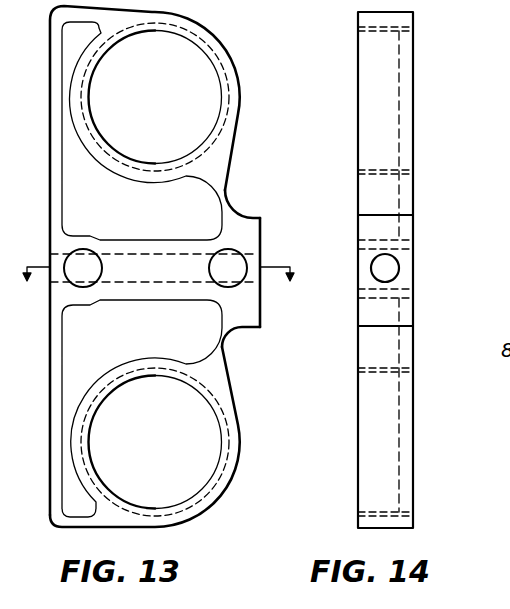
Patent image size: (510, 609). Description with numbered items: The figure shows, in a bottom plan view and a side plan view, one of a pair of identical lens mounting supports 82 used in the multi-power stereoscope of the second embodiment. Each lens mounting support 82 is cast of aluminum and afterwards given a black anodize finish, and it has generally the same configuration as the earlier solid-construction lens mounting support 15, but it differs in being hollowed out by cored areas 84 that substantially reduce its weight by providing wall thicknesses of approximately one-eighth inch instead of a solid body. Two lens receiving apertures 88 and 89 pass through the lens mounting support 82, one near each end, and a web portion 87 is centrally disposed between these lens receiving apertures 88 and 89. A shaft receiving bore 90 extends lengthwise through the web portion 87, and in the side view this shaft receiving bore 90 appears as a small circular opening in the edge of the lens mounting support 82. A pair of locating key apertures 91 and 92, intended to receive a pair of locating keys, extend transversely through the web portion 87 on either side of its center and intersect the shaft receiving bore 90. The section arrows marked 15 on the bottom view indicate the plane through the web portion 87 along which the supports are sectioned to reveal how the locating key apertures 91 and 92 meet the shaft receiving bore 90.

In FIG. 13, the lens mounting support 82 is at (249, 54).
In FIG. 14, the lens mounting support 82 is at (424, 82).
In FIG. 13, the cored area 84 is at (187, 203).
In FIG. 13, the web portion 87 is at (128, 300).
In FIG. 13, the lens receiving aperture 88 is at (183, 48).
In FIG. 13, the lens receiving aperture 89 is at (212, 455).
In FIG. 13, the shaft receiving bore 90 is at (248, 288).
In FIG. 14, the shaft receiving bore 90 is at (390, 268).
In FIG. 13, the locating key aperture 91 is at (78, 263).
In FIG. 13, the locating key aperture 92 is at (228, 263).
In FIG. 13, the lens mounting support 15 is at (162, 286).